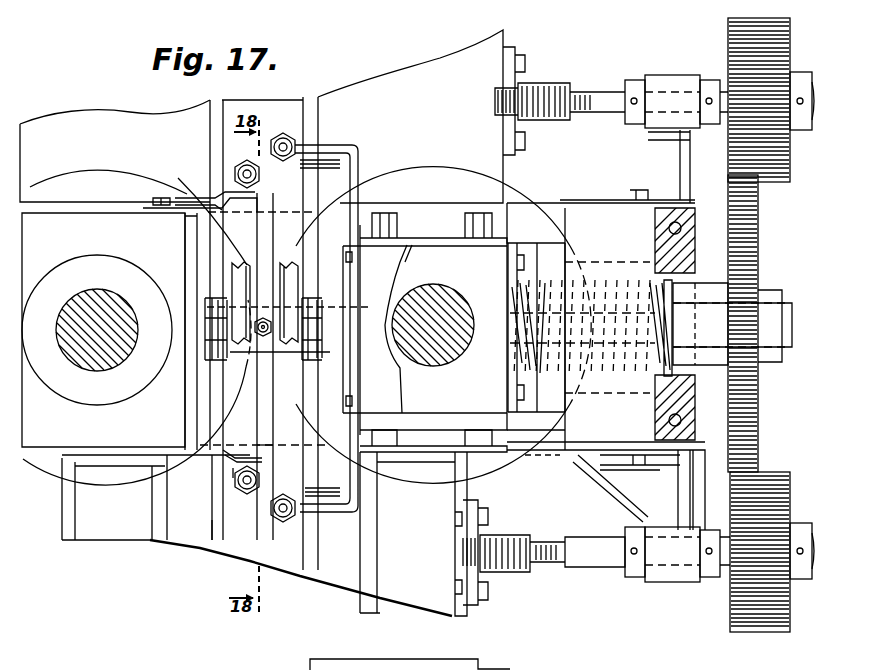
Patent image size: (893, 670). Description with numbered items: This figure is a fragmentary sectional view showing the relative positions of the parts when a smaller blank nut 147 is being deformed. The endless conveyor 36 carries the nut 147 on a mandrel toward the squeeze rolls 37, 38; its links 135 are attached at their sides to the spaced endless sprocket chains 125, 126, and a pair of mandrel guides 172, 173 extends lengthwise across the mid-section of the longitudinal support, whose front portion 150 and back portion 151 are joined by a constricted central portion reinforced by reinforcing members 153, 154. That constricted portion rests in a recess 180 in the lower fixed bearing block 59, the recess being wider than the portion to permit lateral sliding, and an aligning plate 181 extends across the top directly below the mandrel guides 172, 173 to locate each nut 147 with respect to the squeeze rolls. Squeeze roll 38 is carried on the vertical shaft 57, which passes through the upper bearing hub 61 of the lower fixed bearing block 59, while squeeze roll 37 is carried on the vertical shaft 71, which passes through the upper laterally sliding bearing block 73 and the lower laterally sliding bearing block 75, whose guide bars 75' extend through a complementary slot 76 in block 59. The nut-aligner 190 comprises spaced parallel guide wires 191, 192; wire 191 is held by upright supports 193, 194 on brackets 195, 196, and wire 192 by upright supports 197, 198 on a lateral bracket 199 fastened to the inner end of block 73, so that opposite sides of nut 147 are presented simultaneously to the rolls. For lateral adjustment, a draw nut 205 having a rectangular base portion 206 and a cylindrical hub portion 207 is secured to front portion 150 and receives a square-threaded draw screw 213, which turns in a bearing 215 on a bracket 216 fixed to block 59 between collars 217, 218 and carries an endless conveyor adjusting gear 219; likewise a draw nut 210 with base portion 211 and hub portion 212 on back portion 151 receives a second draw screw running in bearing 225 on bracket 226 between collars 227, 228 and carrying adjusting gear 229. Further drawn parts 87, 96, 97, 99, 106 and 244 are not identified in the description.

The back portion 151 is at (447, 69).
The base portion 211 is at (512, 55).
The hub portion 212 is at (555, 85).
The collar 227 is at (634, 80).
The bearing 225 is at (670, 76).
The collar 228 is at (710, 80).
The endless conveyor adjusting gear 229 is at (770, 14).
The aligning plate 181 is at (240, 107).
The upright support 198 is at (283, 139).
The upright support 194 is at (240, 173).
The bracket 196 is at (202, 212).
The lateral bracket 199 is at (357, 148).
The complementary slot 76 is at (362, 186).
The upper laterally sliding bearing block 73 is at (406, 243).
The lower laterally sliding bearing block 75 is at (433, 314).
The guide bars 75' is at (536, 307).
The shaft 244 is at (586, 111).
The draw nut 210 is at (538, 124).
The bracket 226 is at (645, 130).
The worm housing upper bearing 96 is at (604, 280).
The gear 106 is at (760, 240).
The worm shaft 97 is at (788, 293).
The mandrel guide 172 is at (237, 277).
The endless sprocket chain 125 is at (207, 303).
The vertical shaft 57 is at (95, 300).
The mandrel guide 173 is at (283, 263).
The endless conveyor 36 is at (320, 310).
The vertical shaft 71 is at (448, 306).
The upper bearing hub 61 is at (89, 395).
The recess 180 is at (193, 395).
The blank nut 147 is at (262, 336).
The endless sprocket chain 126 is at (322, 356).
The worm housing lower bearing 99 is at (618, 380).
The housing wall 87 is at (556, 395).
The lower fixed bearing block 59 is at (48, 477).
The guide wire 191 is at (264, 433).
The link 135 is at (276, 388).
The guide wire 192 is at (276, 447).
The squeeze roll 38 is at (56, 488).
The bracket 195 is at (233, 461).
The upright support 193 is at (245, 482).
The reinforcing member 154 is at (216, 532).
The nut-aligner 190 is at (259, 525).
The upright support 197 is at (284, 522).
The reinforcing member 153 is at (316, 535).
The front portion 150 is at (452, 614).
The squeeze roll 37 is at (542, 440).
The bracket 216 is at (615, 512).
The hub portion 207 is at (540, 532).
The draw screw 213 is at (574, 544).
The base portion 206 is at (475, 596).
The draw nut 205 is at (495, 573).
The collar 217 is at (630, 577).
The bearing 215 is at (656, 584).
The collar 218 is at (709, 580).
The endless conveyor adjusting gear 219 is at (752, 632).